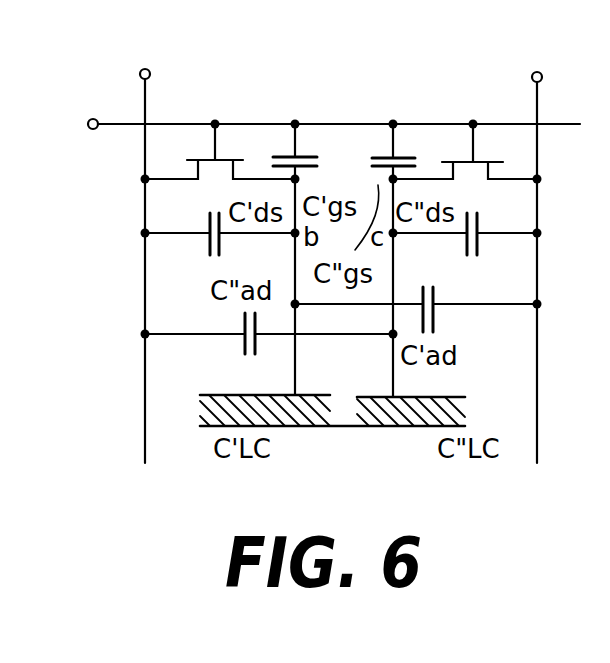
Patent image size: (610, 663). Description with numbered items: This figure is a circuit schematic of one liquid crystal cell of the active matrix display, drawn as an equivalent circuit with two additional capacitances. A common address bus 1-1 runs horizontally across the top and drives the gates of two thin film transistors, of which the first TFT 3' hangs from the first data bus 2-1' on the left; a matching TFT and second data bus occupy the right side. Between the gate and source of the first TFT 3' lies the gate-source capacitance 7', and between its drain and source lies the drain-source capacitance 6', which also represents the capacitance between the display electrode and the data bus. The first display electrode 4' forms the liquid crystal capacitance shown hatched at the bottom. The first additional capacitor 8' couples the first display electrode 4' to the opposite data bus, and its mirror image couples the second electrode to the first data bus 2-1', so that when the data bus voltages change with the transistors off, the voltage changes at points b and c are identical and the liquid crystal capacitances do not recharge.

The common address bus 1-1 is at (311, 125).
The first data bus 2-1' is at (150, 250).
The first thin film transistor 3' is at (220, 123).
The first gate-source capacitance 7' is at (302, 123).
The first drain-source capacitance 6' is at (187, 251).
The first additional capacitor 8' is at (444, 328).
The first display electrode 4' is at (278, 413).